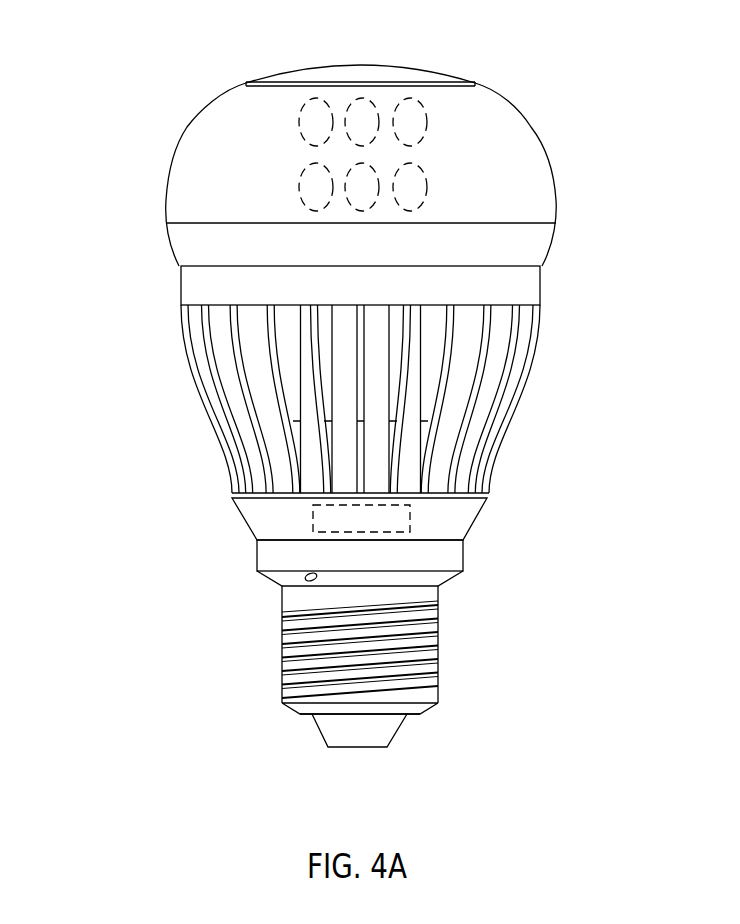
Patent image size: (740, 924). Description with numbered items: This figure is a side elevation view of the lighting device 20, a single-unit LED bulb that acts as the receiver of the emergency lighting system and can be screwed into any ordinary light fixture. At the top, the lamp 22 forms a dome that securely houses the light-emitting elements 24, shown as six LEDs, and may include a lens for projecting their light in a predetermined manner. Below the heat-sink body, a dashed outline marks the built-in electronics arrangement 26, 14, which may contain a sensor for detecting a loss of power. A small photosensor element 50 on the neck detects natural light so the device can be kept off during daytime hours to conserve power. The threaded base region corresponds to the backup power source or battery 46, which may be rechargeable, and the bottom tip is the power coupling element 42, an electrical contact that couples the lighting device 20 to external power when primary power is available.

The lighting device 20 is at (121, 180).
The lamp 22 is at (535, 192).
The light-emitting elements 24 is at (412, 185).
The electronics arrangement 26 is at (463, 515).
The control circuit 14 is at (398, 522).
The photosensor element 50 is at (311, 579).
The battery 46 is at (420, 637).
The power coupling element 42 is at (383, 728).